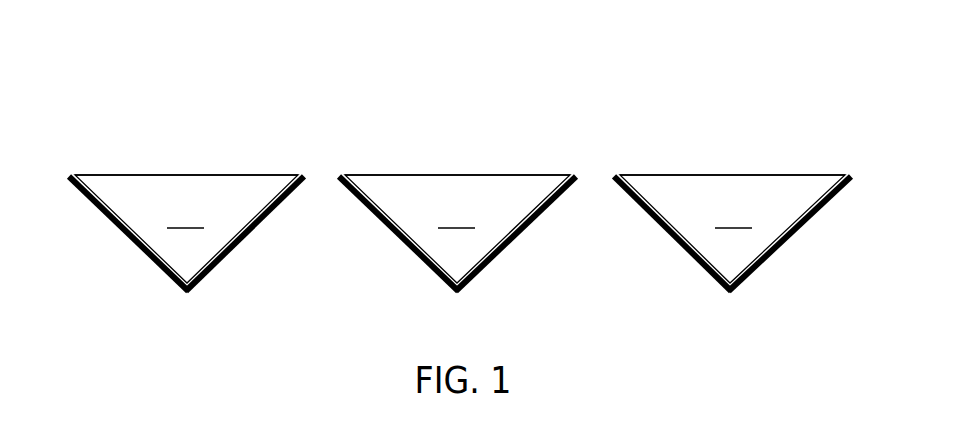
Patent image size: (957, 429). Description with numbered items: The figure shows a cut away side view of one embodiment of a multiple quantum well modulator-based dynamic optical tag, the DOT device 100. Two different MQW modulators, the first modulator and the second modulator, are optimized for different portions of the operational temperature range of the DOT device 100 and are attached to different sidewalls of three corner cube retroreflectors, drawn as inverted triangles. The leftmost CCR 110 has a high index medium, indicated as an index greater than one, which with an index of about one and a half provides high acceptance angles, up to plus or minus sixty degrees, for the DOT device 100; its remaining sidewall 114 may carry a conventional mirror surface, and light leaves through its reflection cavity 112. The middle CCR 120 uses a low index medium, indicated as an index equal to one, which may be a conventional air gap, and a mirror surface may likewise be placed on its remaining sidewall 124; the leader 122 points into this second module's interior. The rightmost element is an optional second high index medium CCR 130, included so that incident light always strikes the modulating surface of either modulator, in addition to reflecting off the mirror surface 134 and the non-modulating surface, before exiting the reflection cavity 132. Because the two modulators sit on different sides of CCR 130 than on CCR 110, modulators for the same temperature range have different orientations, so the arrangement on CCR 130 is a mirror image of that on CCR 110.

The DOT device 100 is at (105, 101).
The CCR 110 is at (180, 175).
The reflection cavity 112 is at (225, 210).
The remaining sidewall 114 is at (186, 216).
The CCR 120 is at (430, 175).
The second module body 122 is at (492, 208).
The remaining sidewall 124 is at (457, 216).
The second high index medium CCR 130 is at (723, 175).
The reflection cavity 132 is at (770, 207).
The mirror surface 134 is at (734, 216).